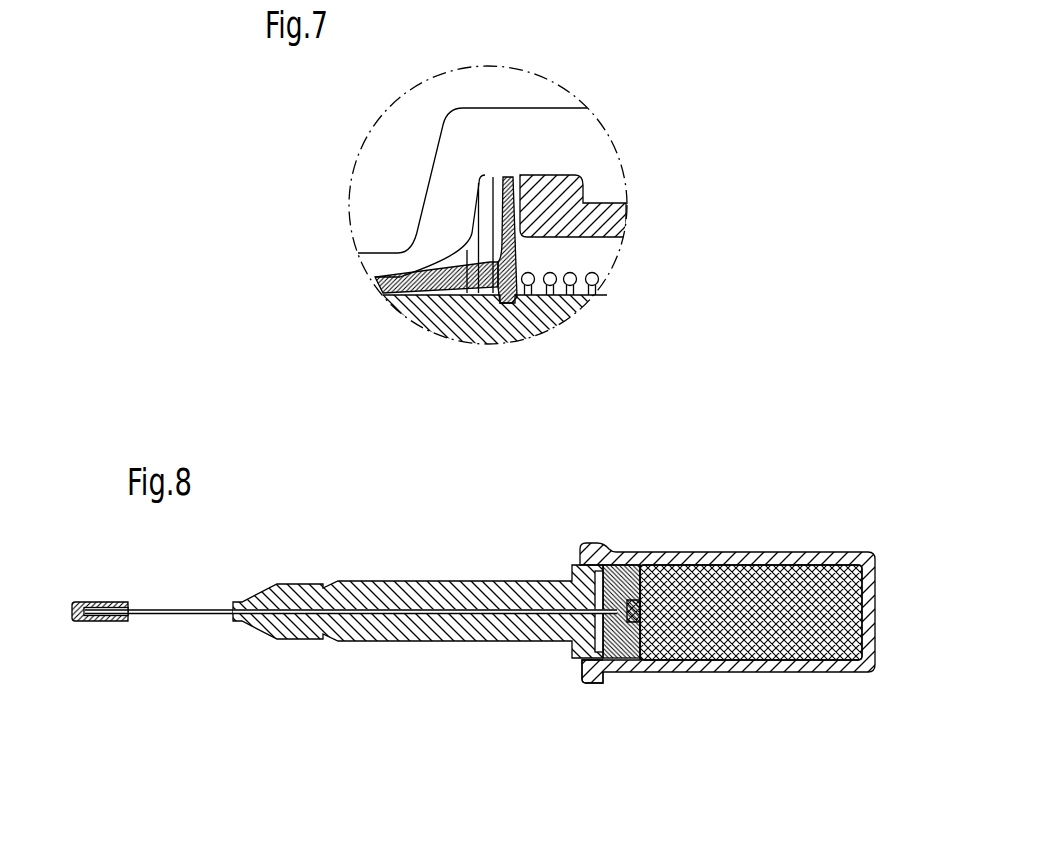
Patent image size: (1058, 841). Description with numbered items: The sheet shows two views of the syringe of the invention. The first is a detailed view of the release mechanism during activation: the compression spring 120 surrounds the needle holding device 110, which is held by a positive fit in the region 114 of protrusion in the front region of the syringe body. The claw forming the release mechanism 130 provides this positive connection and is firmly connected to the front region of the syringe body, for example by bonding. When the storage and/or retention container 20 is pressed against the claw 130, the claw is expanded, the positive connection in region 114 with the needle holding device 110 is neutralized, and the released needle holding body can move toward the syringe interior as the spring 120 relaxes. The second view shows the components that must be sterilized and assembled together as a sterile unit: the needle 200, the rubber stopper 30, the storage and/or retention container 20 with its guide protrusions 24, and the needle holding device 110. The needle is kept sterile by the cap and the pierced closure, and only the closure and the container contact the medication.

In FIG. 7, the retention and/or storage container 20 is at (603, 226).
In FIG. 8, the retention and/or storage container 20 is at (660, 663).
In FIG. 8, the guide protrusions 24 is at (585, 683).
In FIG. 8, the stopper 30 is at (623, 566).
In FIG. 8, the needle holding device 110 is at (408, 627).
In FIG. 7, the region of protrusion 114 is at (383, 293).
In FIG. 7, the compression spring 120 is at (567, 300).
In FIG. 7, the release mechanism 130 is at (500, 178).
In FIG. 8, the needle 200 is at (177, 614).